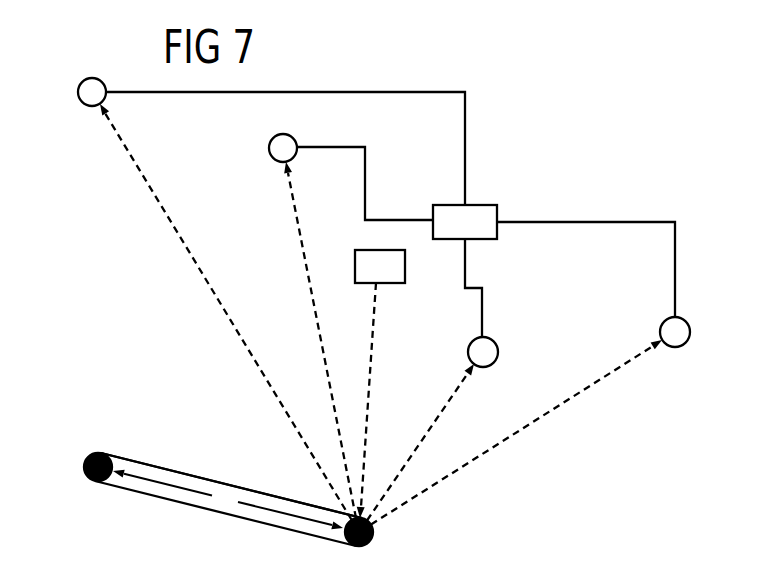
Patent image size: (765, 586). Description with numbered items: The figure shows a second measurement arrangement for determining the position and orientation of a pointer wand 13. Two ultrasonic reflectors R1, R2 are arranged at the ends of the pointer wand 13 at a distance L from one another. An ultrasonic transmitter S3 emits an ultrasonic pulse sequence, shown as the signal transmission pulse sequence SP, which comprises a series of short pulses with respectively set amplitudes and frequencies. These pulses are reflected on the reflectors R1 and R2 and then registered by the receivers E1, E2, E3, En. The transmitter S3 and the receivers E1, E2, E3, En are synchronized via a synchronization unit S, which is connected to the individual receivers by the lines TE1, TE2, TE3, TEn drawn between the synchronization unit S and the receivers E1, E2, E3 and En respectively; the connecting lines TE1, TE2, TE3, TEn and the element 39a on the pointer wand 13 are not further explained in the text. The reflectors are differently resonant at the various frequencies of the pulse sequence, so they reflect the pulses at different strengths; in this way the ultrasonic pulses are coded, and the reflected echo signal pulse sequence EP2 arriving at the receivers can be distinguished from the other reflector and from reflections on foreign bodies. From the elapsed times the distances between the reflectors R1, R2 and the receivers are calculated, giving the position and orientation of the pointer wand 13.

The receiver En is at (75, 94).
The receiver E1 is at (265, 149).
The receiver E2 is at (499, 356).
The receiver E3 is at (691, 336).
The synchronization unit S is at (465, 223).
The ultrasonic transmitter S3 is at (438, 241).
The n-th transmission line TEn is at (465, 143).
The first transmission line TE1 is at (365, 178).
The second transmission line TE2 is at (465, 265).
The third transmission line TE3 is at (612, 222).
The echo signal pulse sequence EP2 is at (316, 296).
The signal transmission pulse sequence SP is at (382, 400).
The ultrasonic reflector R1 is at (86, 478).
The ultrasonic reflector R2 is at (372, 541).
The distance L is at (228, 499).
The pointer wand 13 is at (234, 488).
The link edge 39a is at (337, 510).